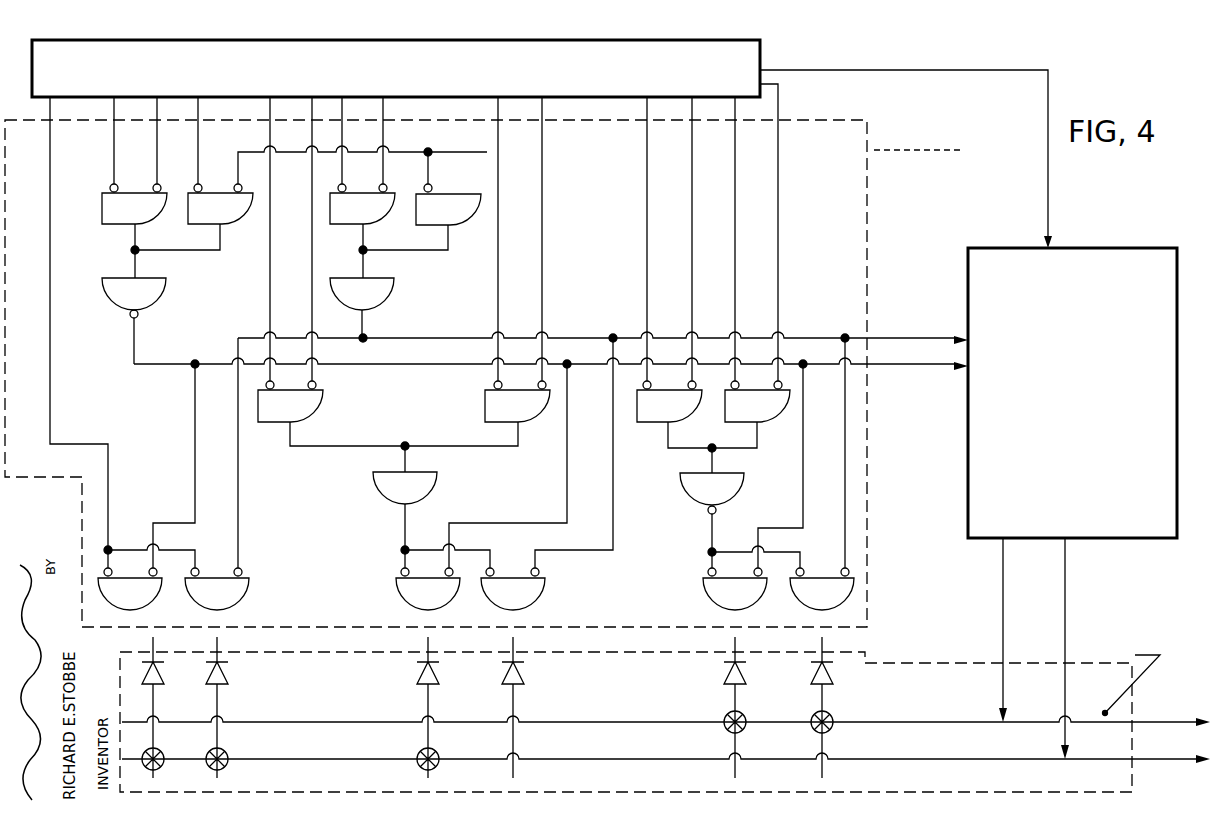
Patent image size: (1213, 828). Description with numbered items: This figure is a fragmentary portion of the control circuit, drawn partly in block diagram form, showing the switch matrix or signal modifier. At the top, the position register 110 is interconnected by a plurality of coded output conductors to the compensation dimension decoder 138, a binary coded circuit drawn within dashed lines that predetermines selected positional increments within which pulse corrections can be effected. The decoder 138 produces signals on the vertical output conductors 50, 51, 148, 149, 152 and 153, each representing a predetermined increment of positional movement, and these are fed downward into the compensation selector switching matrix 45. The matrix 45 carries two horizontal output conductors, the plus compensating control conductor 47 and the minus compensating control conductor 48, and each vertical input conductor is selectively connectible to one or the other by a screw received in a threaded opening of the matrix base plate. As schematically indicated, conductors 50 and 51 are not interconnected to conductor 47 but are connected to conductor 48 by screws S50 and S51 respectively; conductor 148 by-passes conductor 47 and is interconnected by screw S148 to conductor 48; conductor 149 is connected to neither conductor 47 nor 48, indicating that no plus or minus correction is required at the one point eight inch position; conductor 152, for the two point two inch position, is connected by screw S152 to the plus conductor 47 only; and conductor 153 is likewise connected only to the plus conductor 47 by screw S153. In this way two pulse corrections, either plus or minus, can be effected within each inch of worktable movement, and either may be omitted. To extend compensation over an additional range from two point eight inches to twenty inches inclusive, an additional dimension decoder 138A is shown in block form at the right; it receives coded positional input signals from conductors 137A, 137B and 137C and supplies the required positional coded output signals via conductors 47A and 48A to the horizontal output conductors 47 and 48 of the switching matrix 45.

The position register 110 is at (757, 82).
The conductor 137A is at (862, 72).
The conductor 137B is at (872, 340).
The conductor 137C is at (882, 365).
The compensation dimension decoder 138 is at (905, 152).
The additional dimension decoder 138A is at (975, 503).
The plus compensating control conductor 47 is at (265, 722).
The minus compensating control conductor 48 is at (272, 759).
The conductor 47A is at (1003, 566).
The conductor 48A is at (1067, 570).
The compensation selector switching matrix 45 is at (722, 794).
The vertical input conductor 50 is at (153, 700).
The vertical input conductor 51 is at (217, 700).
The vertical input conductor 148 is at (428, 700).
The input conductor 149 is at (513, 703).
The vertical input conductor 152 is at (735, 697).
The vertical input conductor 153 is at (822, 697).
The screw S50 is at (171, 767).
The screw S51 is at (241, 767).
The screw S148 is at (384, 767).
The screw S152 is at (735, 733).
The screw S153 is at (822, 733).